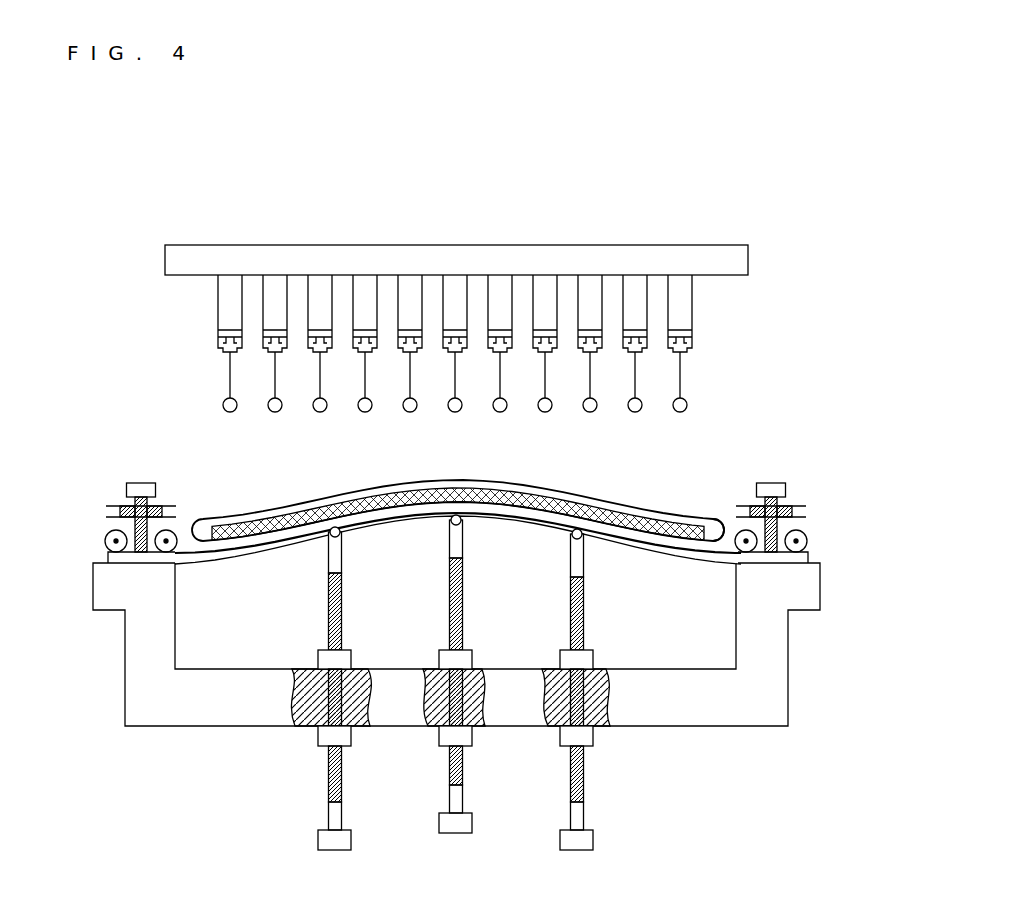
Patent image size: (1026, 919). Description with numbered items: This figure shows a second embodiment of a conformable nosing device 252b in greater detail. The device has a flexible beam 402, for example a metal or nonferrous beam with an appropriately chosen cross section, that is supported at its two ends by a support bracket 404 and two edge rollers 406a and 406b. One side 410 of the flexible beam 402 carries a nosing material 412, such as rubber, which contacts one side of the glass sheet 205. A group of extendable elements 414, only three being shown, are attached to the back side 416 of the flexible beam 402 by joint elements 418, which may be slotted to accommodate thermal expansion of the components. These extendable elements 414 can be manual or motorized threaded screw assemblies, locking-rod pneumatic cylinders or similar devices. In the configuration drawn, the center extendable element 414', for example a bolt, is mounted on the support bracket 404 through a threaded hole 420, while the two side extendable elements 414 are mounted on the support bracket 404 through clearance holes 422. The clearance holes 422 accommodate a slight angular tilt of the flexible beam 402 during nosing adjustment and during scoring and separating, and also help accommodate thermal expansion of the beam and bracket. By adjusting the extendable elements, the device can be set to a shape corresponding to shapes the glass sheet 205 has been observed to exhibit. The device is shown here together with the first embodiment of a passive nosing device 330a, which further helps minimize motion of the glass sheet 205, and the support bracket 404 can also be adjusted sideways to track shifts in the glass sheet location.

The conformable nosing device 252b is at (726, 158).
The passive nosing device 330a is at (130, 243).
The glass sheet 205 is at (252, 517).
The edge roller 406a is at (105, 537).
The edge roller 406b is at (807, 542).
The nosing material 412 is at (713, 530).
The side of the flexible beam 410 is at (723, 551).
The flexible beam 402 is at (800, 557).
The support bracket 404 is at (757, 660).
The back side of the flexible beam 416 is at (195, 566).
The joint elements 418 is at (342, 531).
The extendable elements 414 is at (492, 691).
The center extendable element 414' is at (495, 676).
The threaded hole 420 is at (440, 698).
The clearance holes 422 is at (320, 697).